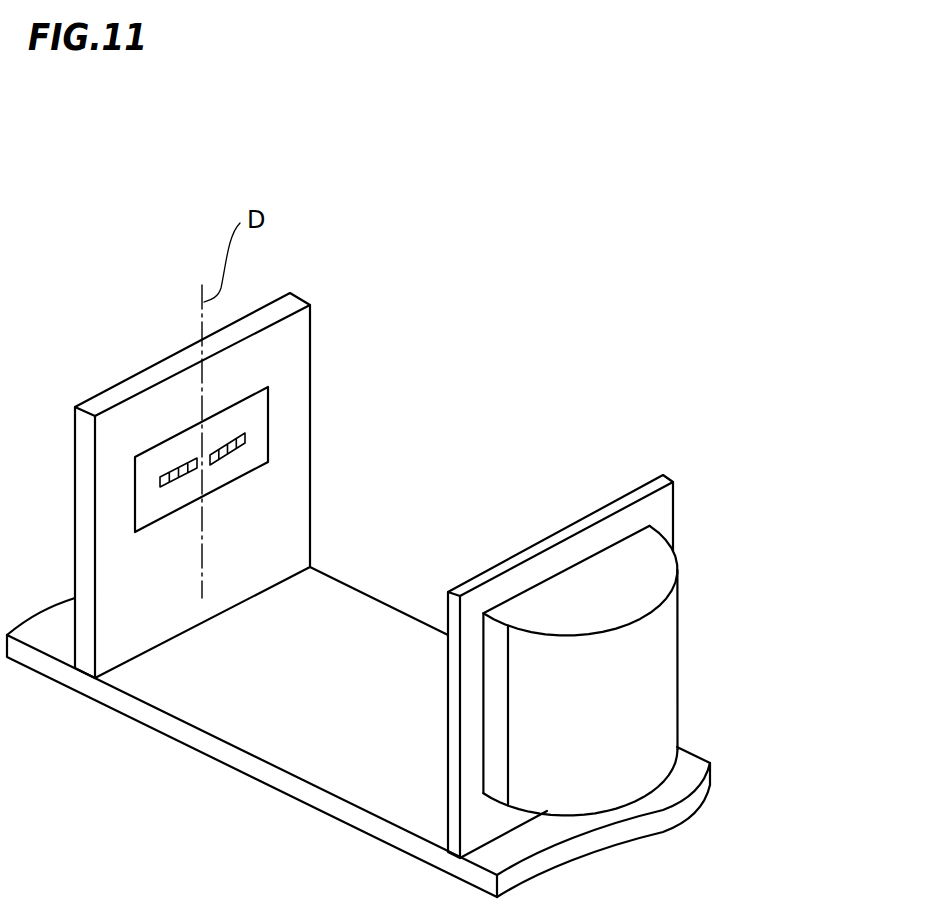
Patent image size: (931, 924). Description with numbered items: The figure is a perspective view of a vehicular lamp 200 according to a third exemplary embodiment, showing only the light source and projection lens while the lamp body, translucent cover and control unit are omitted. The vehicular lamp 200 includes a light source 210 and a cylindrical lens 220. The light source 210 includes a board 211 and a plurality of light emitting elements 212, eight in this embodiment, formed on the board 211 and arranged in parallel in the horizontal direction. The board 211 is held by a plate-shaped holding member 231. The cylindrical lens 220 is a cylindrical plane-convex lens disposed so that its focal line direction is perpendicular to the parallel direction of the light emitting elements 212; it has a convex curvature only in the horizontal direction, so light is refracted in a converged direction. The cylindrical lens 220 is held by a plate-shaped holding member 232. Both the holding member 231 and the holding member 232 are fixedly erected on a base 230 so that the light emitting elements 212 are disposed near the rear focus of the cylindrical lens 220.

The vehicular lamp 200 is at (453, 302).
The light source 210 is at (197, 444).
The board 211 is at (257, 448).
The light emitting elements 212 is at (160, 478).
The cylindrical lens 220 is at (668, 658).
The base 230 is at (213, 748).
The holding member 231 is at (158, 370).
The holding member 232 is at (578, 523).